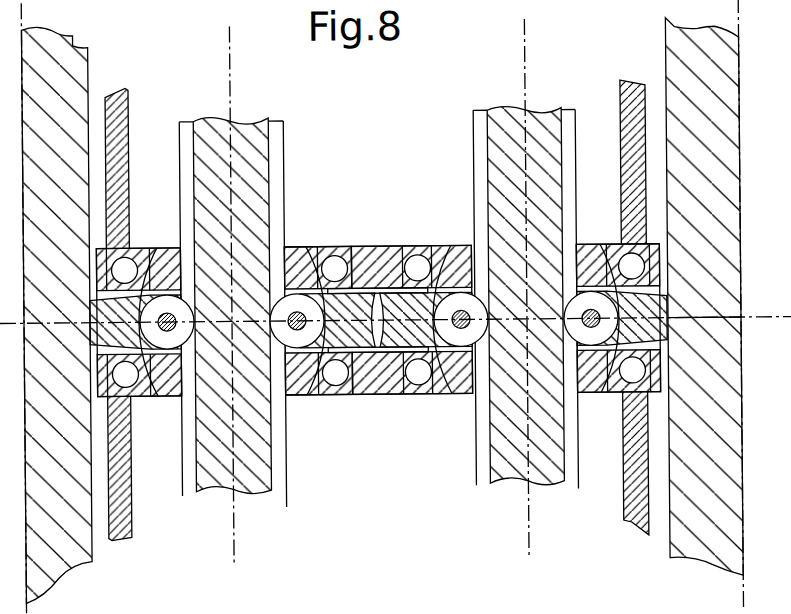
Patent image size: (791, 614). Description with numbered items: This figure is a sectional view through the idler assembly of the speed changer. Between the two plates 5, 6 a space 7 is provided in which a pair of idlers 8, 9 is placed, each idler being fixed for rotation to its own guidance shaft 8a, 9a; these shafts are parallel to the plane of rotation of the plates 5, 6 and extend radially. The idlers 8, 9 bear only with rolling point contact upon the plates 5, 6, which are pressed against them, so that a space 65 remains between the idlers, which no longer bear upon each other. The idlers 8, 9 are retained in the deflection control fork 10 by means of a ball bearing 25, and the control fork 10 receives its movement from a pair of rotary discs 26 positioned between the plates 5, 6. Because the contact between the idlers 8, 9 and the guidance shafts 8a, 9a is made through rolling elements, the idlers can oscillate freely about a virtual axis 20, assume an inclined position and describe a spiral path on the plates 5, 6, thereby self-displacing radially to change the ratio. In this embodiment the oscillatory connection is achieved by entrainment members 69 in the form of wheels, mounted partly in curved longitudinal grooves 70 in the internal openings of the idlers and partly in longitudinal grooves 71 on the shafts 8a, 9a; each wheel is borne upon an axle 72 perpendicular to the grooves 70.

The plate 5 is at (80, 66).
The plate 6 is at (692, 535).
The space 7 is at (378, 109).
The idler 8 is at (372, 246).
The idler 9 is at (395, 246).
The shaft 8a is at (245, 486).
The shaft 9a is at (511, 466).
The control fork 10 is at (377, 246).
The virtual axis 20 is at (723, 321).
The ball bearing 25 is at (624, 392).
The rotary disc 26 is at (126, 497).
The space 65 is at (368, 394).
The entrainment member 69 is at (300, 246).
The longitudinal groove 70 is at (303, 394).
The longitudinal groove 71 is at (283, 175).
The axle 72 is at (467, 394).